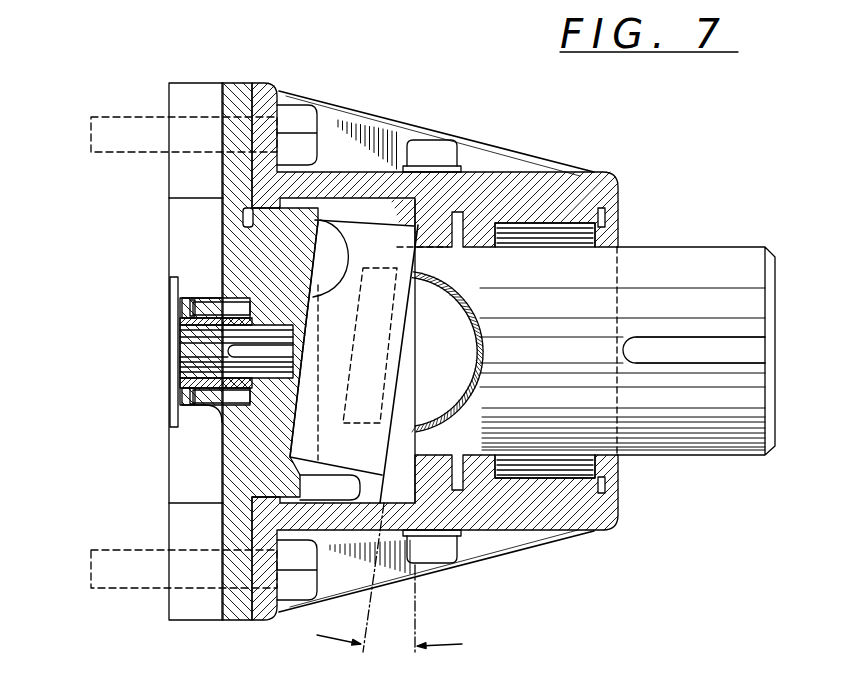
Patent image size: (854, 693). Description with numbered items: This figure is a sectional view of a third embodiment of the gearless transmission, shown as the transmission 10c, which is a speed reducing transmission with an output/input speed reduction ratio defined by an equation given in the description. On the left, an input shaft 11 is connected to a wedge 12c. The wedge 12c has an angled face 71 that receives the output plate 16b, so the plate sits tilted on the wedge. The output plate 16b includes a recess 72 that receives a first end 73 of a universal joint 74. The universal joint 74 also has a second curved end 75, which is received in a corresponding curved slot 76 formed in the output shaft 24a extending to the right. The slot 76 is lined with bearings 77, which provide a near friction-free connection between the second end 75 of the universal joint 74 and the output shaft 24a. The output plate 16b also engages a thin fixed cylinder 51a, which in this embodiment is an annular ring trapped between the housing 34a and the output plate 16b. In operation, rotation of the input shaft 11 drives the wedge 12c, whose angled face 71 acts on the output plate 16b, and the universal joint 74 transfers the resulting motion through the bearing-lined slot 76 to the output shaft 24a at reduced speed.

The third transmission 10c is at (516, 134).
The input shaft 11 is at (207, 348).
The wedge 12c is at (273, 118).
The output plate 16b is at (398, 225).
The output shaft 24a is at (683, 283).
The housing 34a is at (623, 523).
The thin fixed cylinder 51a is at (400, 295).
The angled face 71 is at (347, 222).
The recess 72 is at (467, 455).
The first end 73 is at (357, 403).
The universal joint 74 is at (399, 440).
The second curved end 75 is at (462, 303).
The curved slot 76 is at (445, 392).
The bearings 77 is at (489, 243).